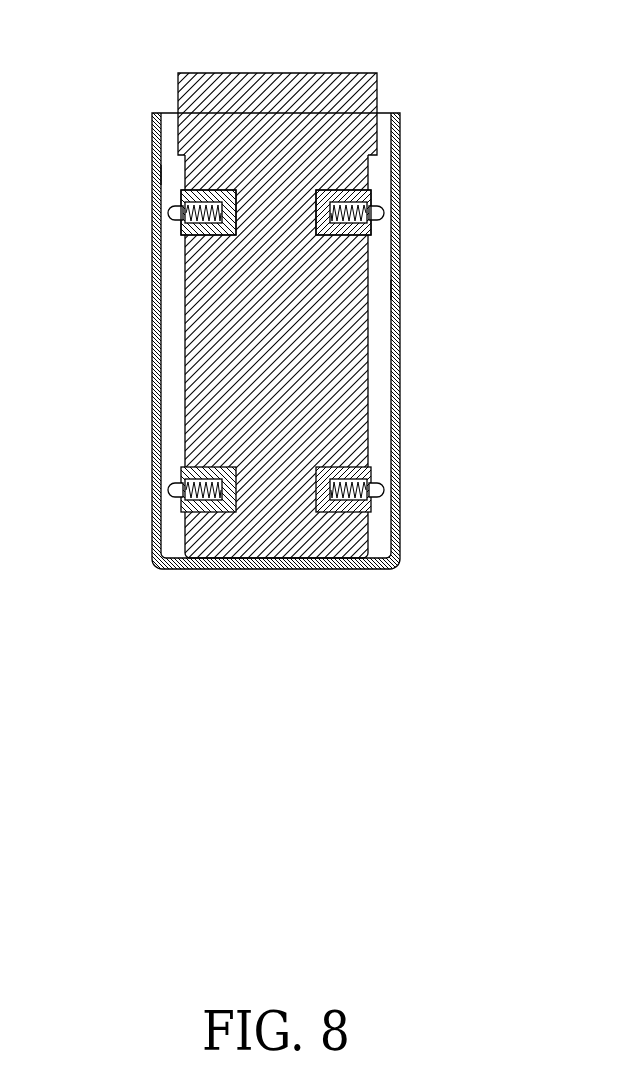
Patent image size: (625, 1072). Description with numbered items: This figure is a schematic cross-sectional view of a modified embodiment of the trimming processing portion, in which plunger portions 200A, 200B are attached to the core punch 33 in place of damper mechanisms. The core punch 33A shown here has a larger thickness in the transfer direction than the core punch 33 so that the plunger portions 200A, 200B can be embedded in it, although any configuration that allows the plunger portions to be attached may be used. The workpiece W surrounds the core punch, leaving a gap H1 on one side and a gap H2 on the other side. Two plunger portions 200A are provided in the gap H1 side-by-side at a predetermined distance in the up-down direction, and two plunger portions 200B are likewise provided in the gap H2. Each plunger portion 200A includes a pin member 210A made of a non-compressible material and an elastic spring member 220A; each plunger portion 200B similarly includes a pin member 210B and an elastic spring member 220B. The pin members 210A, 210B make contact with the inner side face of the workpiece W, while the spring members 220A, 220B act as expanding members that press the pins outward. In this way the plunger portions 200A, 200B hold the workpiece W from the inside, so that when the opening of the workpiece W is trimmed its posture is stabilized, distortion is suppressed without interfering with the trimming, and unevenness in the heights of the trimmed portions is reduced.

The core punch 33 is at (350, 72).
The core punch 33A is at (200, 377).
The plunger portion 200A is at (172, 196).
The plunger portion 200B is at (374, 193).
The pin member 210A is at (169, 213).
The pin member 210B is at (384, 213).
The spring member 220A is at (183, 232).
The spring member 220B is at (355, 235).
The gap H1 is at (175, 173).
The gap H2 is at (379, 292).
The workpiece W is at (280, 570).